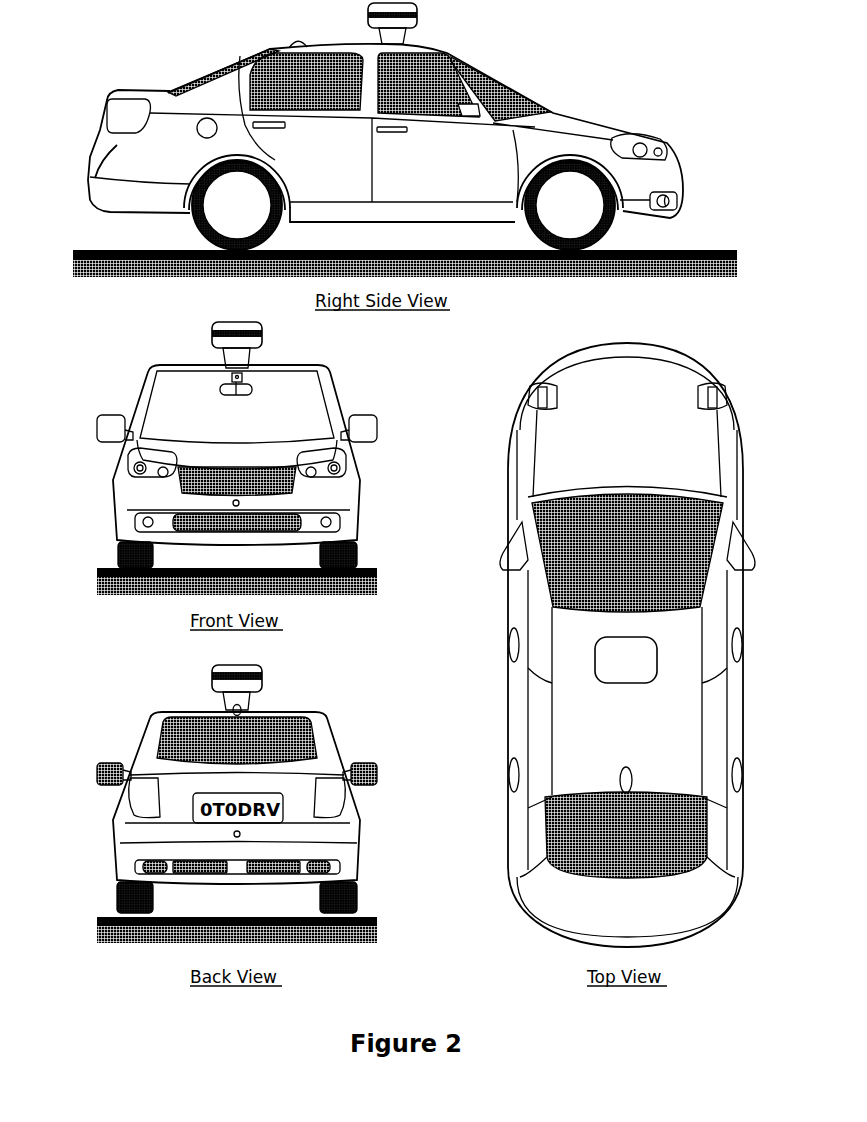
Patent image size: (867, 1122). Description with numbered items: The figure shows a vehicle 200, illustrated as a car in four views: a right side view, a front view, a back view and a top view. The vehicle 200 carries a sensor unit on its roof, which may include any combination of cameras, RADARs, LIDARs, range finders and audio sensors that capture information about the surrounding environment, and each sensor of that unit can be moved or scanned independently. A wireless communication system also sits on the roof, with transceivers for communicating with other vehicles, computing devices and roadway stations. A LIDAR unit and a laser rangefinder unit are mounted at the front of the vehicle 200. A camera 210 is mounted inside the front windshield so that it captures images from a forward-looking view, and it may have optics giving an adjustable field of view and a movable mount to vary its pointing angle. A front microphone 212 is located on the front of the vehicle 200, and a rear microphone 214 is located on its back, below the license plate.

The vehicle 200 is at (84, 80).
The camera 210 is at (245, 378).
The front microphone 212 is at (233, 503).
The rear microphone 214 is at (234, 835).